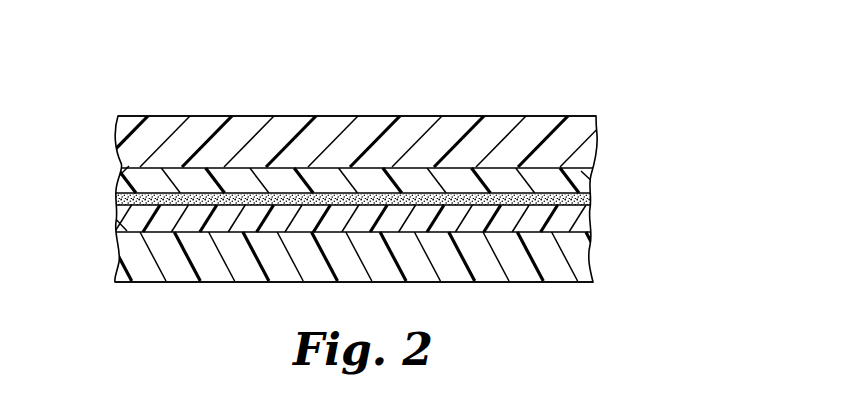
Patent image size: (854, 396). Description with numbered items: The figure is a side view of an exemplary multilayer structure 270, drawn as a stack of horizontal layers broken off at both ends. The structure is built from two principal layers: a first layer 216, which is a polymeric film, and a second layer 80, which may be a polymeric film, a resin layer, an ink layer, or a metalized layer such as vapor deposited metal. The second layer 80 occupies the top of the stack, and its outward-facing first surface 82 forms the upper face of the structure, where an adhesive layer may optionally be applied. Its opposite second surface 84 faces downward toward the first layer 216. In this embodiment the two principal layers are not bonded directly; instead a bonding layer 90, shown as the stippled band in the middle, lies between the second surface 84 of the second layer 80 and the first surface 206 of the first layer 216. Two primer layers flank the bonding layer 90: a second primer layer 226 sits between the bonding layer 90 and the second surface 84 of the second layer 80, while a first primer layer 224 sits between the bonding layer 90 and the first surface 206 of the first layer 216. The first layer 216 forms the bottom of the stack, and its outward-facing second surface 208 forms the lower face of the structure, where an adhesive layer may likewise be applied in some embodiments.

The multilayer structure 270 is at (547, 81).
The second layer 80 is at (602, 120).
The first surface of the second layer 82 is at (208, 115).
The second surface of the second layer 84 is at (120, 173).
The second primer layer 226 is at (587, 180).
The bonding layer 90 is at (592, 199).
The first primer layer 224 is at (590, 225).
The first surface of the first layer 206 is at (118, 222).
The first layer 216 is at (600, 274).
The second surface of the first layer 208 is at (147, 283).